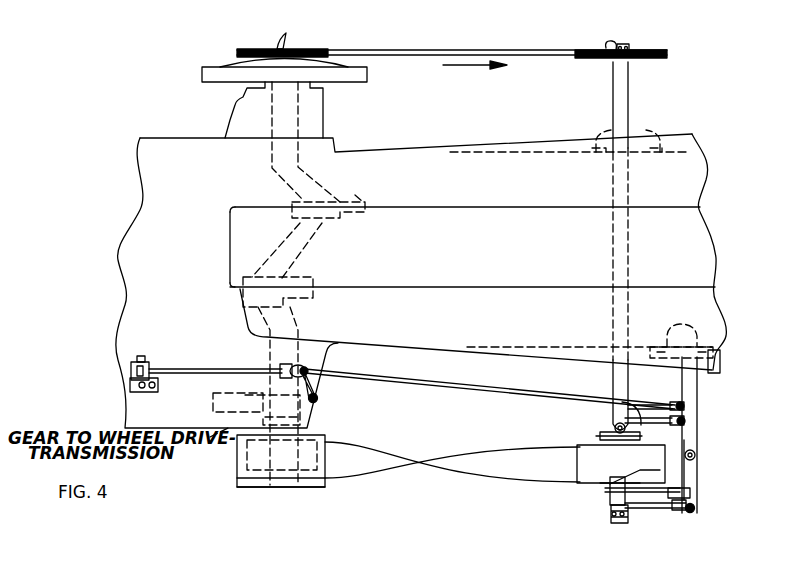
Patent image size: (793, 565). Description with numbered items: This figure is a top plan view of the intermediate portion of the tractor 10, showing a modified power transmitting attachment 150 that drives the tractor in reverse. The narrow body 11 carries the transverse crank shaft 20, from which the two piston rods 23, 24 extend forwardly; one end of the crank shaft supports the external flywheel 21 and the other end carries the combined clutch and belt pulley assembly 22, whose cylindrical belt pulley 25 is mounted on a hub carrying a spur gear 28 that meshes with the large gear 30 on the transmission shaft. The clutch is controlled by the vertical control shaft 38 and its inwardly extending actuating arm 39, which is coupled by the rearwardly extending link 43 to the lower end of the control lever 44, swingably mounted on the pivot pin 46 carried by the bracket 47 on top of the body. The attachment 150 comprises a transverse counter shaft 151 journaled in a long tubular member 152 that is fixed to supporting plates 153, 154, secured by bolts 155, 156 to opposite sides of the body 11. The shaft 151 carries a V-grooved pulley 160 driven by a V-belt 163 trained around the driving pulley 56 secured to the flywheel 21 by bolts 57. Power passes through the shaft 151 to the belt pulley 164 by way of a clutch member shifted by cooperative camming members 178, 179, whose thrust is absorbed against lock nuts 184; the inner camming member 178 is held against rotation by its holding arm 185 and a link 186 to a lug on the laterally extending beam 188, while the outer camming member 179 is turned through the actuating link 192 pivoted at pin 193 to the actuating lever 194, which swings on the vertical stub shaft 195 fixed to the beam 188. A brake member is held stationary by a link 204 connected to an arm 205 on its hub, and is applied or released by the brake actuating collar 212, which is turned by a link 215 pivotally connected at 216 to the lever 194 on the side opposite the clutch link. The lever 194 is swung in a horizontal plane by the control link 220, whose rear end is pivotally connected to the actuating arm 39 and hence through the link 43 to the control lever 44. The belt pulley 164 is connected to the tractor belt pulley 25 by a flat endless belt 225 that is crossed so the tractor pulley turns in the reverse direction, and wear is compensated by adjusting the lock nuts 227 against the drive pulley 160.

The tractor 10 is at (511, 142).
The body 11 is at (186, 282).
The crank shaft 20 is at (298, 118).
The flywheel 21 is at (368, 79).
The combined clutch and belt pulley assembly 22 is at (244, 494).
The piston rod 23 is at (355, 218).
The piston rod 24 is at (315, 283).
The belt pulley 25 is at (322, 486).
The spur gear 28 is at (282, 368).
The gear 30 is at (225, 418).
The control shaft 38 is at (315, 402).
The actuating arm 39 is at (310, 371).
The link 43 is at (208, 369).
The control lever 44 is at (131, 368).
The pivot pin 46 is at (143, 360).
The bracket 47 is at (158, 384).
The driving pulley 56 is at (326, 49).
The bolts 57 is at (279, 47).
The power transmitting attachment 150 is at (715, 403).
The counter shaft 151 is at (622, 524).
The tubular member 152 is at (628, 232).
The supporting plate 153 is at (655, 133).
The supporting plate 154 is at (628, 376).
The bolts 155 is at (612, 140).
The bolts 156 is at (670, 347).
The pulley 160 is at (655, 50).
The V-belt 163 is at (462, 43).
The belt pulley 164 is at (590, 485).
The camming member 178 is at (612, 496).
The camming member 179 is at (611, 520).
The lock nuts 184 is at (613, 520).
The holding arm 185 is at (650, 494).
The link 186 is at (692, 495).
The beam 188 is at (702, 370).
The actuating link 192 is at (664, 510).
The pivot pin 193 is at (694, 511).
The actuating lever 194 is at (697, 478).
The stub shaft 195 is at (697, 455).
The link 204 is at (622, 446).
The arm 205 is at (600, 436).
The brake actuating collar 212 is at (620, 420).
The link 215 is at (626, 404).
The pivot connection 216 is at (686, 421).
The control link 220 is at (461, 386).
The belt 225 is at (530, 468).
The lock nuts 227 is at (612, 44).